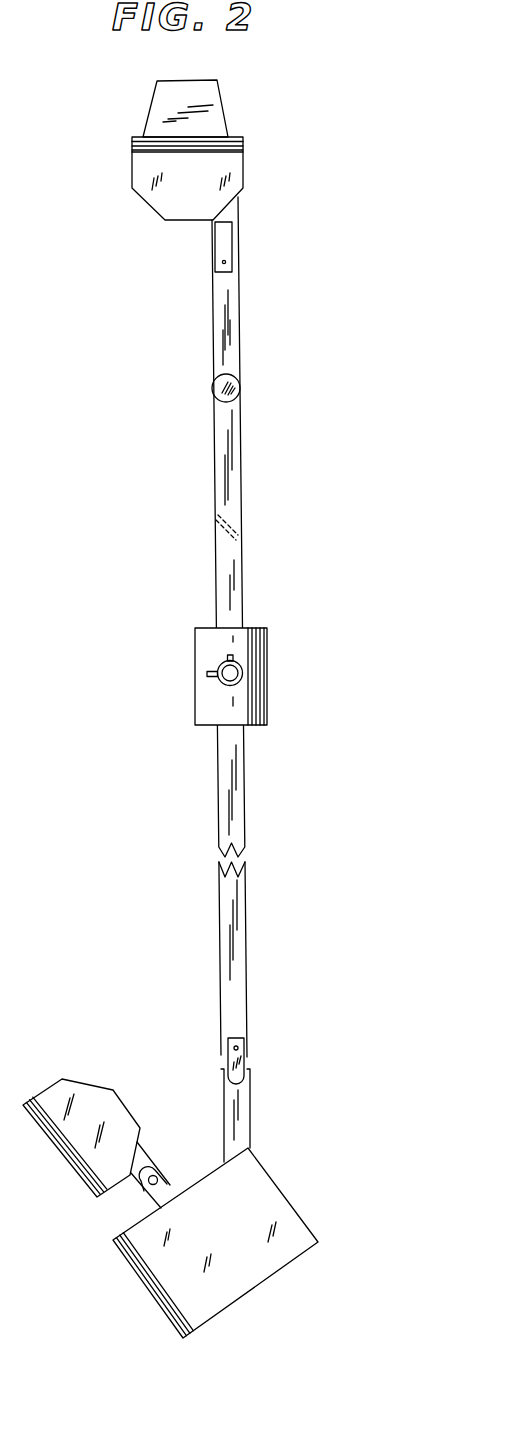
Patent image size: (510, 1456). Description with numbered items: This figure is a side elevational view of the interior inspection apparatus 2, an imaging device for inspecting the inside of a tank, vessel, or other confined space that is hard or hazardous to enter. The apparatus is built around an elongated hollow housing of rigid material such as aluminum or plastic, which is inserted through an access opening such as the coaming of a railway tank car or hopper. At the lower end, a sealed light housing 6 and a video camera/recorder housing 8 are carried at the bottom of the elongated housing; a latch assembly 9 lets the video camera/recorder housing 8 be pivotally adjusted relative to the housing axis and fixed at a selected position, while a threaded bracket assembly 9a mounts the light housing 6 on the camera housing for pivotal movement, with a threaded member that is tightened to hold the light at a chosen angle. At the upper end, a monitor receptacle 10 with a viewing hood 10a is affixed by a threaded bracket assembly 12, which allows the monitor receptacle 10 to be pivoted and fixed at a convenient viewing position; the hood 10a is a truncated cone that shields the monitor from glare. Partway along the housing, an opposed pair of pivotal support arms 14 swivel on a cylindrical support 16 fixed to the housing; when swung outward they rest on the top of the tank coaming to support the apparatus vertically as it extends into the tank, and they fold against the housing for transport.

The imaging apparatus 2 is at (242, 499).
The sealed light housing 6 is at (92, 1088).
The video camera/recorder housing 8 is at (262, 1188).
The latch assembly 9 is at (240, 1045).
The threaded bracket assembly 9a is at (158, 1180).
The monitor receptacle 10 is at (173, 200).
The viewing hood 10a is at (157, 103).
The threaded bracket assembly 12 is at (223, 238).
The pivotal support arms 14 is at (221, 683).
The cylindrical support 16 is at (208, 647).